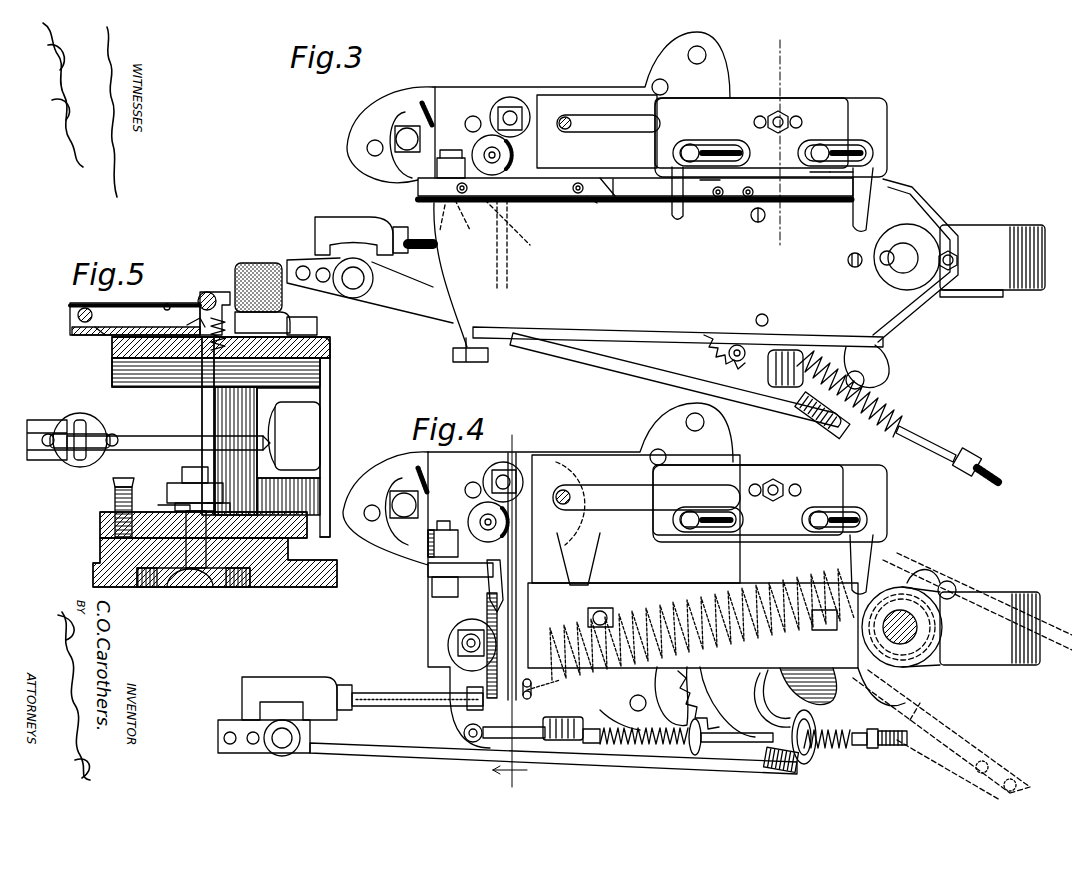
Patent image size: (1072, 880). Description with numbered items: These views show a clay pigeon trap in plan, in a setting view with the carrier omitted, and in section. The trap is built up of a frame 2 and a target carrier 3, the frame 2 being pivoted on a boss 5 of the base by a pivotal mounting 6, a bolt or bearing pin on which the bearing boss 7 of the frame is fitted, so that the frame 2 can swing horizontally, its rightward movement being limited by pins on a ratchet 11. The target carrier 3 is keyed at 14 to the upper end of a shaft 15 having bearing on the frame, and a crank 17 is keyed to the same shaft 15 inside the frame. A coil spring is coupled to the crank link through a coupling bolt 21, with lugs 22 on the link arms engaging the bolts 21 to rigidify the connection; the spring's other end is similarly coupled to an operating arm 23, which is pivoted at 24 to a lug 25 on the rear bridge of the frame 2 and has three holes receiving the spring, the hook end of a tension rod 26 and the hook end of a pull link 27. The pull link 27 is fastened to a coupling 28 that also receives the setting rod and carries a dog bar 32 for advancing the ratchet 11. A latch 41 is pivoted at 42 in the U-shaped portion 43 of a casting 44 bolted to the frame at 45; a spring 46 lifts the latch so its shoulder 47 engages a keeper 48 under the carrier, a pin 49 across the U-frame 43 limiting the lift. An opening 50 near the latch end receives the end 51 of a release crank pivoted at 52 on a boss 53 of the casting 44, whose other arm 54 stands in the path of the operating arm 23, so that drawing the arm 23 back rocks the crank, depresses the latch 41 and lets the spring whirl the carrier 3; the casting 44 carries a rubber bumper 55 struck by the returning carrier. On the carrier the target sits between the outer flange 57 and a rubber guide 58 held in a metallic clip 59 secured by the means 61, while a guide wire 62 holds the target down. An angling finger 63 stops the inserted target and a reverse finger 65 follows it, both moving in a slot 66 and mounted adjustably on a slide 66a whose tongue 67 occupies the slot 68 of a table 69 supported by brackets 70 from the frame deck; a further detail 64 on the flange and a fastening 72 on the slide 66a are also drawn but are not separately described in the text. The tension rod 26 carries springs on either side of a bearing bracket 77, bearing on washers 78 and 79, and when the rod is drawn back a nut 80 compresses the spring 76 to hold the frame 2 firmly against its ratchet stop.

In FIG. 5, the frame 2 is at (330, 346).
In FIG. 3, the target carrier 3 is at (574, 315).
In FIG. 4, the boss 5 is at (510, 614).
In FIG. 5, the boss 5 is at (100, 556).
In FIG. 3, the pivotal mounting 6 is at (778, 154).
In FIG. 5, the pivotal mounting 6 is at (200, 550).
In FIG. 5, the bearing boss 7 is at (100, 524).
In FIG. 4, the ratchet 11 is at (495, 567).
In FIG. 3, the key 14 is at (885, 262).
In FIG. 3, the shaft 15 is at (908, 253).
In FIG. 4, the crank 17 is at (902, 620).
In FIG. 4, the coupling bolt 21 is at (505, 648).
In FIG. 4, the lugs 22 is at (533, 686).
In FIG. 4, the operating arm 23 is at (463, 718).
In FIG. 5, the operating arm 23 is at (182, 437).
In FIG. 5, the pivot 24 is at (320, 387).
In FIG. 4, the lug 25 is at (643, 748).
In FIG. 5, the lug 25 is at (297, 425).
In FIG. 3, the tension rod 26 is at (930, 436).
In FIG. 4, the tension rod 26 is at (897, 746).
In FIG. 4, the pull link 27 is at (380, 697).
In FIG. 4, the coupling 28 is at (280, 687).
In FIG. 4, the dog bar 32 is at (375, 748).
In FIG. 3, the latch 41 is at (457, 184).
In FIG. 5, the latch 41 is at (107, 312).
In FIG. 5, the pivot 42 is at (78, 317).
In FIG. 4, the U-shaped portion 43 is at (533, 697).
In FIG. 5, the U-shaped portion 43 is at (97, 331).
In FIG. 5, the casting 44 is at (270, 326).
In FIG. 4, the bolt 45 is at (402, 500).
In FIG. 5, the bolt 45 is at (313, 323).
In FIG. 5, the spring 46 is at (203, 320).
In FIG. 5, the shoulder 47 is at (223, 292).
In FIG. 3, the keeper 48 is at (512, 205).
In FIG. 4, the pin 49 is at (508, 612).
In FIG. 5, the pin 49 is at (166, 306).
In FIG. 5, the opening 50 is at (209, 292).
In FIG. 4, the end of release crank 51 is at (478, 575).
In FIG. 5, the end of release crank 51 is at (209, 290).
In FIG. 4, the pivot 52 is at (428, 575).
In FIG. 4, the boss 53 is at (440, 548).
In FIG. 5, the release crank arm 54 is at (207, 392).
In FIG. 5, the rubber bumper 55 is at (262, 267).
In FIG. 3, the outer flange 57 is at (803, 345).
In FIG. 3, the guide 58 is at (830, 188).
In FIG. 3, the metallic clip 59 is at (614, 197).
In FIG. 3, the securing means 61 is at (710, 188).
In FIG. 3, the guide wire 62 is at (520, 327).
In FIG. 3, the angling finger 63 is at (676, 198).
In FIG. 3, the pin 64 is at (614, 197).
In FIG. 3, the finger 65 is at (863, 202).
In FIG. 3, the slot 66 is at (757, 223).
In FIG. 3, the slide 66a is at (820, 108).
In FIG. 5, the tongue 67 is at (118, 483).
In FIG. 3, the slot 68 is at (589, 120).
In FIG. 3, the table 69 is at (557, 107).
In FIG. 3, the brackets 70 is at (589, 204).
In FIG. 3, the bolt 72 is at (781, 118).
In FIG. 3, the spring 76 is at (898, 410).
In FIG. 4, the spring 76 is at (840, 750).
In FIG. 3, the bearing bracket 77 is at (786, 388).
In FIG. 4, the bearing bracket 77 is at (782, 748).
In FIG. 4, the washer 78 is at (697, 755).
In FIG. 4, the washer 79 is at (805, 765).
In FIG. 3, the nut 80 is at (975, 458).
In FIG. 4, the nut 80 is at (871, 749).